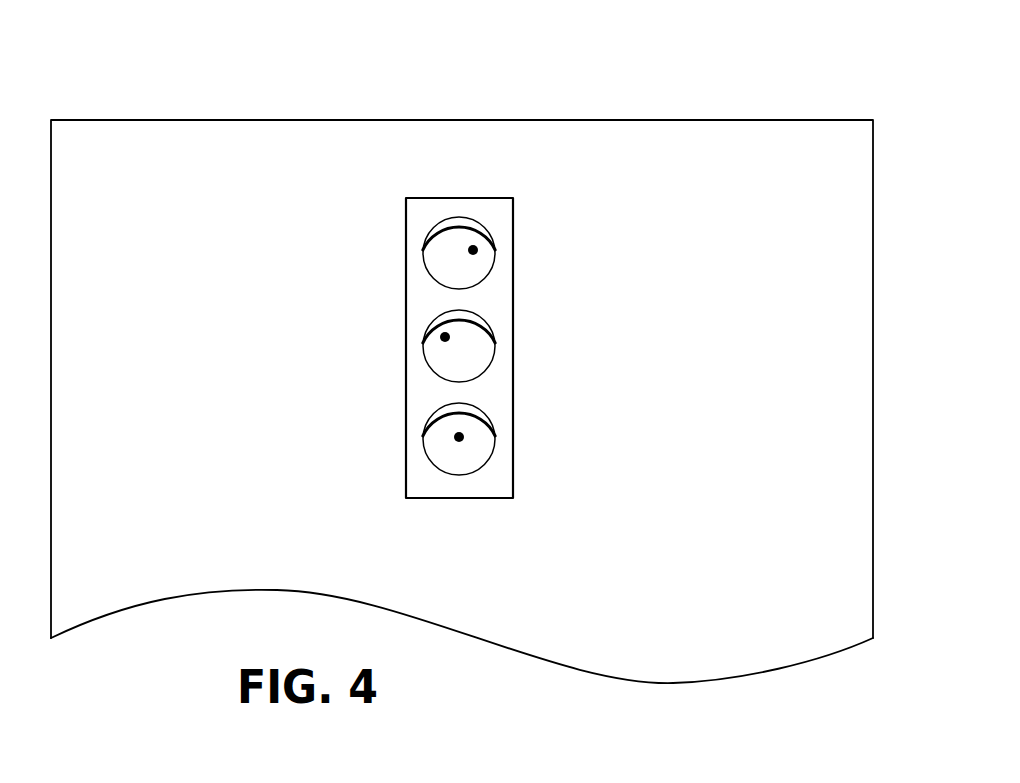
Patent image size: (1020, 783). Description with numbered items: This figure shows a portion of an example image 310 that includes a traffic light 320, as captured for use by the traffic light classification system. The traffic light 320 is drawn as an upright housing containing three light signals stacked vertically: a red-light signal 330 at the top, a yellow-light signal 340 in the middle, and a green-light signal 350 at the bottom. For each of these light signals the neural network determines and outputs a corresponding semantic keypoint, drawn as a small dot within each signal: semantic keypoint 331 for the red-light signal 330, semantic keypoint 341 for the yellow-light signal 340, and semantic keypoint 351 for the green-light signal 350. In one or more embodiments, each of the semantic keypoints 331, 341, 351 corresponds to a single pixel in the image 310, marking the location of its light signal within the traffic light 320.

The image 310 is at (788, 120).
The traffic light 320 is at (438, 198).
The red-light signal 330 is at (493, 272).
The semantic keypoint 331 is at (473, 250).
The yellow-light signal 340 is at (493, 363).
The semantic keypoint 341 is at (445, 338).
The green-light signal 350 is at (493, 455).
The semantic keypoint 351 is at (459, 442).